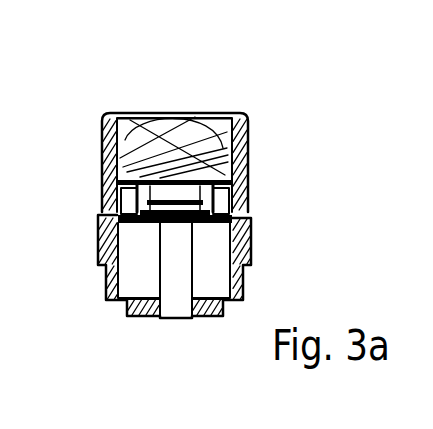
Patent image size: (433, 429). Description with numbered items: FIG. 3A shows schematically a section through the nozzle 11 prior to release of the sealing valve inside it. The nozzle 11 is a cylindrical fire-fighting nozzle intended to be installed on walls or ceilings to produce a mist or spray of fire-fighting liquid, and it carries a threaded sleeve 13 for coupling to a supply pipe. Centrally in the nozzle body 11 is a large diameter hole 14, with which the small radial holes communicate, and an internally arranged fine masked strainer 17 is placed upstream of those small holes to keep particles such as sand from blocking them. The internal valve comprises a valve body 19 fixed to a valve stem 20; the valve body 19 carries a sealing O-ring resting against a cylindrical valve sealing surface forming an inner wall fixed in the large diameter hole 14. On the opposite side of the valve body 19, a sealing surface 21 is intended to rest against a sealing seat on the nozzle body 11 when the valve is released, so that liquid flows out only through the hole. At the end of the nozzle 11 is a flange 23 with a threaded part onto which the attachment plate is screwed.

The nozzle 11 is at (249, 150).
The threaded sleeve 13 is at (102, 147).
The large diameter hole 14 is at (223, 122).
The fine masked strainer 17 is at (152, 165).
The valve body 19 is at (243, 203).
The valve stem 20 is at (182, 279).
The sealing surface 21 is at (152, 222).
The flange 23 is at (144, 313).